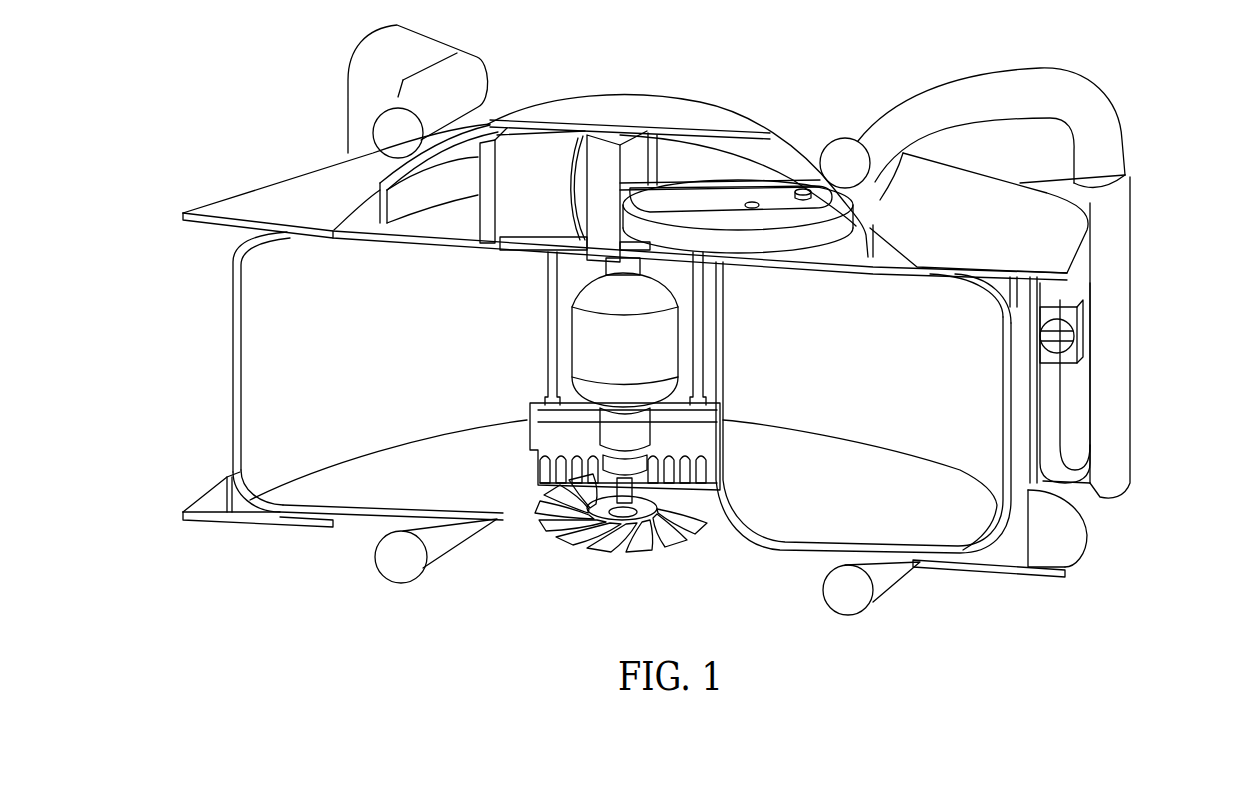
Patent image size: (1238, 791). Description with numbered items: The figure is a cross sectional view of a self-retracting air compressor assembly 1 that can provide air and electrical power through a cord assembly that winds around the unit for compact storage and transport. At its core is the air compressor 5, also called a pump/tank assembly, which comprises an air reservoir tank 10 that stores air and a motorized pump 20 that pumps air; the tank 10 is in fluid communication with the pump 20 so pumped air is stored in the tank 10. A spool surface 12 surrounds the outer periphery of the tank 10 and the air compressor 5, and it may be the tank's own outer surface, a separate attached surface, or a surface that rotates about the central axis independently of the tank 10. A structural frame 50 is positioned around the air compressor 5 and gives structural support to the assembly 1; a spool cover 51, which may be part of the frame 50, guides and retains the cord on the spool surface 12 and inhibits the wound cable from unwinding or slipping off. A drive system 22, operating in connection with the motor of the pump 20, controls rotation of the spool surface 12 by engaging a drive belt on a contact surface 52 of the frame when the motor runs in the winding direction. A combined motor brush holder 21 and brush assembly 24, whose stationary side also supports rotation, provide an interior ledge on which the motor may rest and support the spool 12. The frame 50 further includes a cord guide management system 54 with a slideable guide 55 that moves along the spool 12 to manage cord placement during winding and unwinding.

The air compressor assembly 1 is at (288, 119).
The air compressor 5 is at (985, 551).
The air reservoir tank 10 is at (278, 406).
The spool surface 12 is at (233, 299).
The motorized pump 20 is at (660, 347).
The motor brush holder 21 is at (535, 421).
The drive system 22 is at (777, 186).
The brush assembly 24 is at (680, 490).
The structural frame 50 is at (1085, 120).
The spool cover 51 is at (260, 199).
The contact surface 52 is at (910, 237).
The cord guide management system 54 is at (1110, 413).
The slideable guide 55 is at (1060, 346).